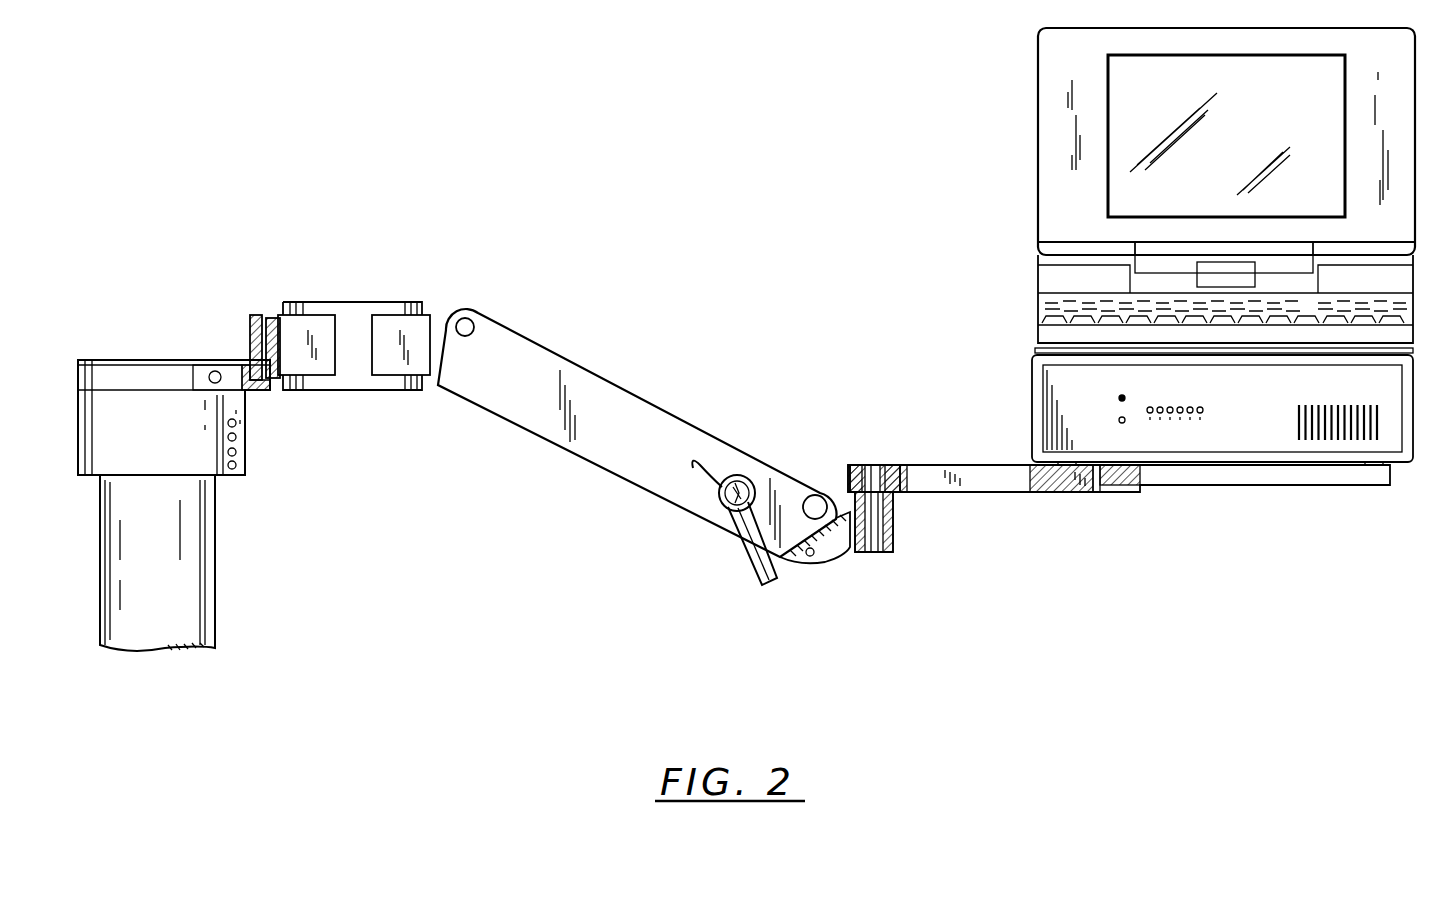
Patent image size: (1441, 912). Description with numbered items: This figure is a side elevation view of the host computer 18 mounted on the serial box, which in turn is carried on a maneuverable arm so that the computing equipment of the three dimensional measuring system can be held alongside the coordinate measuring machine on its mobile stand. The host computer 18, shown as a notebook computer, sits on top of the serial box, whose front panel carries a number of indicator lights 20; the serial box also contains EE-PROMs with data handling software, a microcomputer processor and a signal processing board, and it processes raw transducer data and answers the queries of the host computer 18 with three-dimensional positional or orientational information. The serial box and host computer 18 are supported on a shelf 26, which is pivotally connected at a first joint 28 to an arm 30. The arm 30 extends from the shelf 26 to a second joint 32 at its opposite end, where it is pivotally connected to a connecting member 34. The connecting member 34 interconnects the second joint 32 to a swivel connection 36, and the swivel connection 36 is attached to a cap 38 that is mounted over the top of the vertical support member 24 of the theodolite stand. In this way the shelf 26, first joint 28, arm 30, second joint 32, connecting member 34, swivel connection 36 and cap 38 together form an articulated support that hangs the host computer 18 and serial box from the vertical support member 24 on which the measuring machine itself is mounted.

The host computer 18 is at (1035, 128).
The indicator lights 20 is at (1204, 412).
The vertical support member 24 is at (220, 549).
The shelf 26 is at (978, 495).
The first joint 28 is at (814, 497).
The arm 30 is at (596, 372).
The second joint 32 is at (472, 322).
The connecting member 34 is at (370, 303).
The swivel connection 36 is at (270, 317).
The cap 38 is at (106, 472).